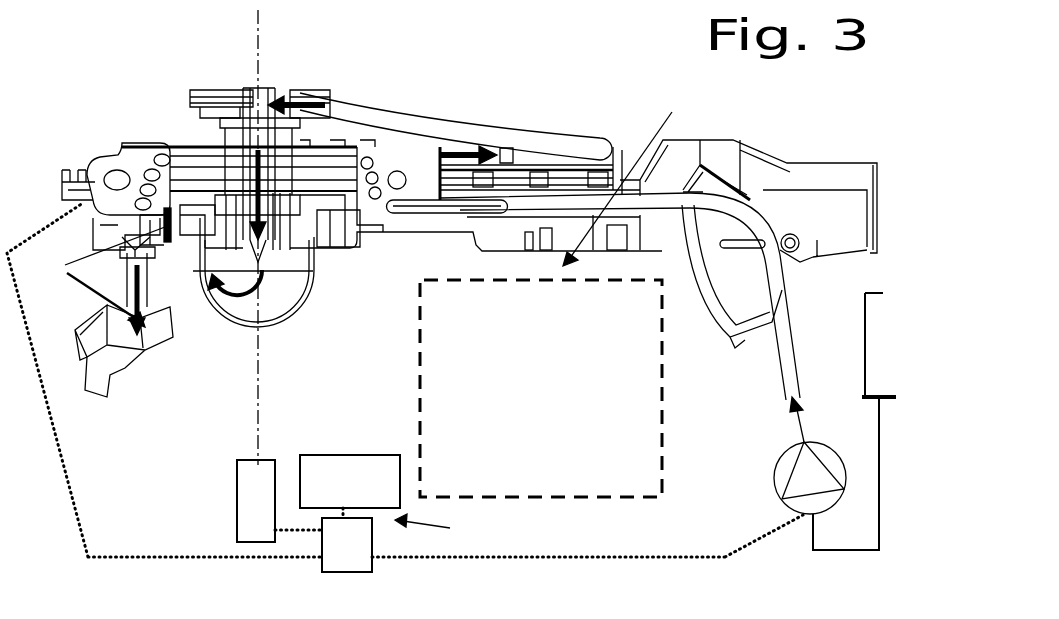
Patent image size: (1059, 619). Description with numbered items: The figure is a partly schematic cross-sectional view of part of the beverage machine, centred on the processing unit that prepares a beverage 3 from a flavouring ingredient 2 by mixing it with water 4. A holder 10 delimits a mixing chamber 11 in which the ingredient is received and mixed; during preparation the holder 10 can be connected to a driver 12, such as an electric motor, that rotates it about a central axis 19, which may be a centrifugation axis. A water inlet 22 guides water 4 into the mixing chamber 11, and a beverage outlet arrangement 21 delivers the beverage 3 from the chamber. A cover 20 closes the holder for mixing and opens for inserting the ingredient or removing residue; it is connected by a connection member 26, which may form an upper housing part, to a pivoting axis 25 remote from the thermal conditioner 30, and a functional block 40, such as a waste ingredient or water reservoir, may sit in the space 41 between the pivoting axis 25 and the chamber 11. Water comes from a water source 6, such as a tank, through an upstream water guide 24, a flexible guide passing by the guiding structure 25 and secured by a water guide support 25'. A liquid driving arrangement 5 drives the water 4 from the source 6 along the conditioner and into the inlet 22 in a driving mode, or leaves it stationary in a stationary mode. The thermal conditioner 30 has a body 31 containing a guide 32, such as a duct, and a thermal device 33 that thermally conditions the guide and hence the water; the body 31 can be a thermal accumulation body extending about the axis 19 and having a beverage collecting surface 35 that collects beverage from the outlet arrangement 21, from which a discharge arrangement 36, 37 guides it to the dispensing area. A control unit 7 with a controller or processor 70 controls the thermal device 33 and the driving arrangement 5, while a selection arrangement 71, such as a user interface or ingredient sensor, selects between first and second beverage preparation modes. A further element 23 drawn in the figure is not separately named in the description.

The flavouring ingredient 2 is at (270, 298).
The beverage 3 is at (101, 277).
The water 4 is at (310, 100).
The liquid driving arrangement 5 is at (800, 480).
The water source 6 is at (862, 375).
The control unit 7 is at (436, 528).
The holder 10 is at (307, 297).
The mixing chamber 11 is at (310, 277).
The driver 12 is at (243, 473).
The central axis 19 is at (258, 386).
The cover 20 is at (283, 230).
The beverage outlet arrangement 21 is at (201, 217).
The water inlet 22 is at (243, 180).
The supply tube 23 is at (478, 133).
The upstream water guide 24 is at (793, 382).
The pivoting axis 25 is at (808, 281).
The water guide support 25' is at (734, 269).
The connection member 26 is at (765, 172).
The thermal conditioner 30 is at (150, 145).
The thermal accumulation body 31 is at (373, 207).
The guide 32 is at (158, 158).
The thermal device 33 is at (116, 160).
The beverage collecting surface 35 is at (167, 213).
The discharge arrangement 36 is at (140, 263).
The discharge arrangement 37 is at (108, 360).
The functional block 40 is at (663, 452).
The space 41 is at (630, 177).
The controller and/or processor 70 is at (370, 570).
The selection arrangement 71 is at (362, 453).